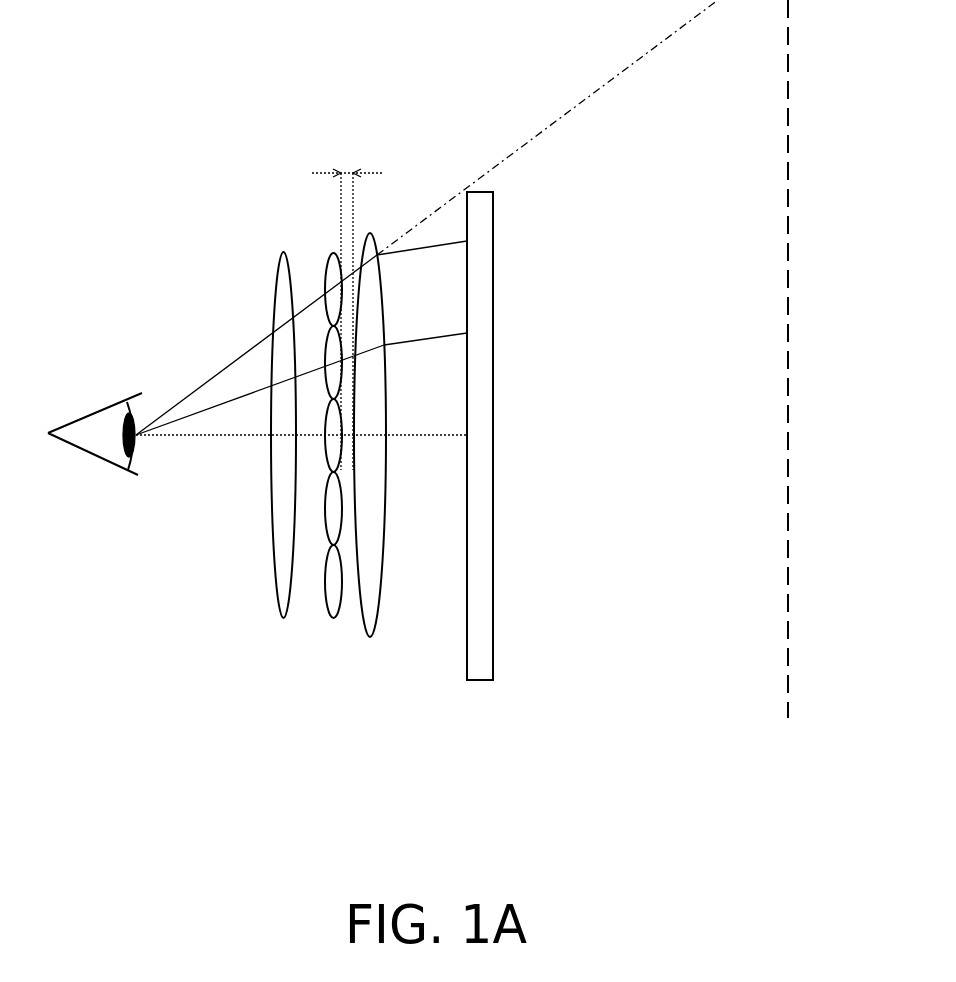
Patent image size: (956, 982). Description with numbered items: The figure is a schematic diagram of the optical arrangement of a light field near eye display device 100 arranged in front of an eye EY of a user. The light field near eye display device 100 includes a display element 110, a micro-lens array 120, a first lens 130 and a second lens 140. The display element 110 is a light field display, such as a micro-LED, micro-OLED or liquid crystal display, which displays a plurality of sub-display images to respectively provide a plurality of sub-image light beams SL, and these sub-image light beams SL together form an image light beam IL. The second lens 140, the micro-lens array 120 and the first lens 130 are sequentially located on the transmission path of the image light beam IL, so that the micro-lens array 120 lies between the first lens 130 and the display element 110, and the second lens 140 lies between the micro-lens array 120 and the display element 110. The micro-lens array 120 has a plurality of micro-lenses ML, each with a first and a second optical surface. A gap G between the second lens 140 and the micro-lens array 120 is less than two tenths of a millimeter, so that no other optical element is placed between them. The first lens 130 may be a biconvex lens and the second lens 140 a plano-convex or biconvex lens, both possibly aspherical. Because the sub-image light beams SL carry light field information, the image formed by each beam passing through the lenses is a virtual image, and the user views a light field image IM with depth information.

The light field near eye display device 100 is at (372, 450).
The display element 110 is at (483, 660).
The micro-lens array 120 is at (321, 434).
The first lens 130 is at (283, 603).
The second lens 140 is at (373, 617).
The eye EY is at (95, 414).
The image light beam IL is at (232, 363).
The sub-image light beams SL is at (418, 249).
The micro-lens ML is at (330, 283).
The gap G is at (347, 305).
The light field image IM is at (790, 693).